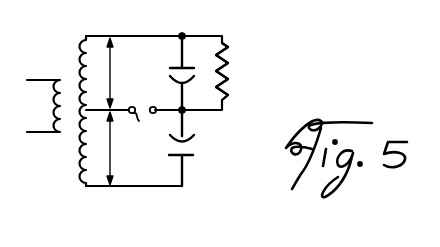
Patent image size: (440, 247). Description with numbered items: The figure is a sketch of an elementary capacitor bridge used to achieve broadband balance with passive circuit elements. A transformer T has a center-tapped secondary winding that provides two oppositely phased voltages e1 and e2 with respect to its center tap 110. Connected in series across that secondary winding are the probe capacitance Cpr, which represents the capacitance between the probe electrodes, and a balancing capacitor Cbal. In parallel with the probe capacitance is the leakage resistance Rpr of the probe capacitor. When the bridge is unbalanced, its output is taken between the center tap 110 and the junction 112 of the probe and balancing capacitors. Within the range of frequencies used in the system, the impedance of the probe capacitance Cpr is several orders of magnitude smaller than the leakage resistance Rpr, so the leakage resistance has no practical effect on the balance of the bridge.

The center tap 110 is at (147, 122).
The junction 112 is at (150, 105).
The transformer T is at (68, 70).
The voltage e1 is at (117, 73).
The voltage e2 is at (115, 148).
The probe capacitance Cpr is at (170, 67).
The leakage resistance Rpr is at (243, 71).
The balancing capacitor Cbal is at (203, 148).